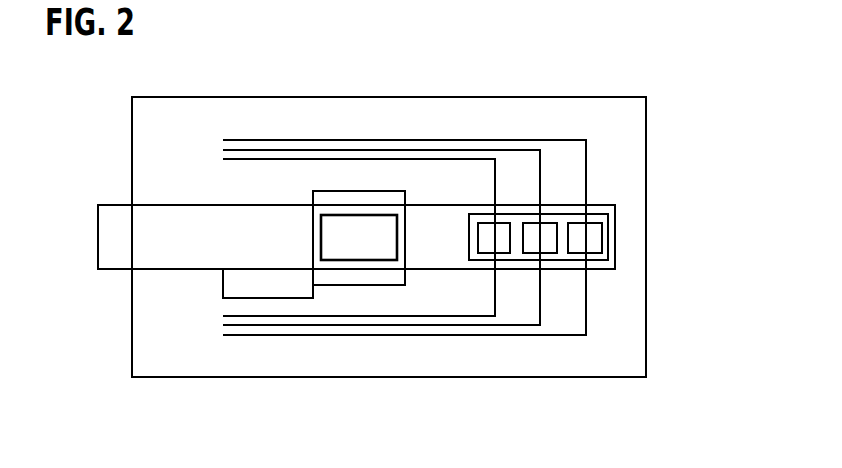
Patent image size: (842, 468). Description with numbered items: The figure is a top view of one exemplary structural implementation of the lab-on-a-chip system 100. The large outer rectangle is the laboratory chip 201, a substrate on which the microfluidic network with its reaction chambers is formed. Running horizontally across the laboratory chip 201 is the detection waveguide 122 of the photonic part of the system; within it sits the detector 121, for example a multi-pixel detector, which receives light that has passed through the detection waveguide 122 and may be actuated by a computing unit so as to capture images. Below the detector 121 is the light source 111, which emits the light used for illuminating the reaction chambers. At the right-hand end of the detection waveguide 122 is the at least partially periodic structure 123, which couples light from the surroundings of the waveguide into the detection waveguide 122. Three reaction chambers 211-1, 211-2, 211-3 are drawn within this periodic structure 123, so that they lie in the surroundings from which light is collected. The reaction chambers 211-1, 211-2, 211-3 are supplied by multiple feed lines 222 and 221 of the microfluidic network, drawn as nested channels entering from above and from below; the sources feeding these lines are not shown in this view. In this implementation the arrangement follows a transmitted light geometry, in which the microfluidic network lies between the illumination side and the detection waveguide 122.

The lab-on-a-chip system 100 is at (703, 42).
The laboratory chip 201 is at (133, 325).
The detection waveguide 122 is at (453, 256).
The detector 121 is at (405, 192).
The light source 111 is at (287, 293).
The at least partially periodic structure 123 is at (585, 138).
The reaction chamber 211-1 is at (500, 222).
The reaction chamber 211-2 is at (547, 222).
The reaction chamber 211-3 is at (592, 222).
The feed line 222 is at (374, 160).
The feed line 221 is at (267, 316).